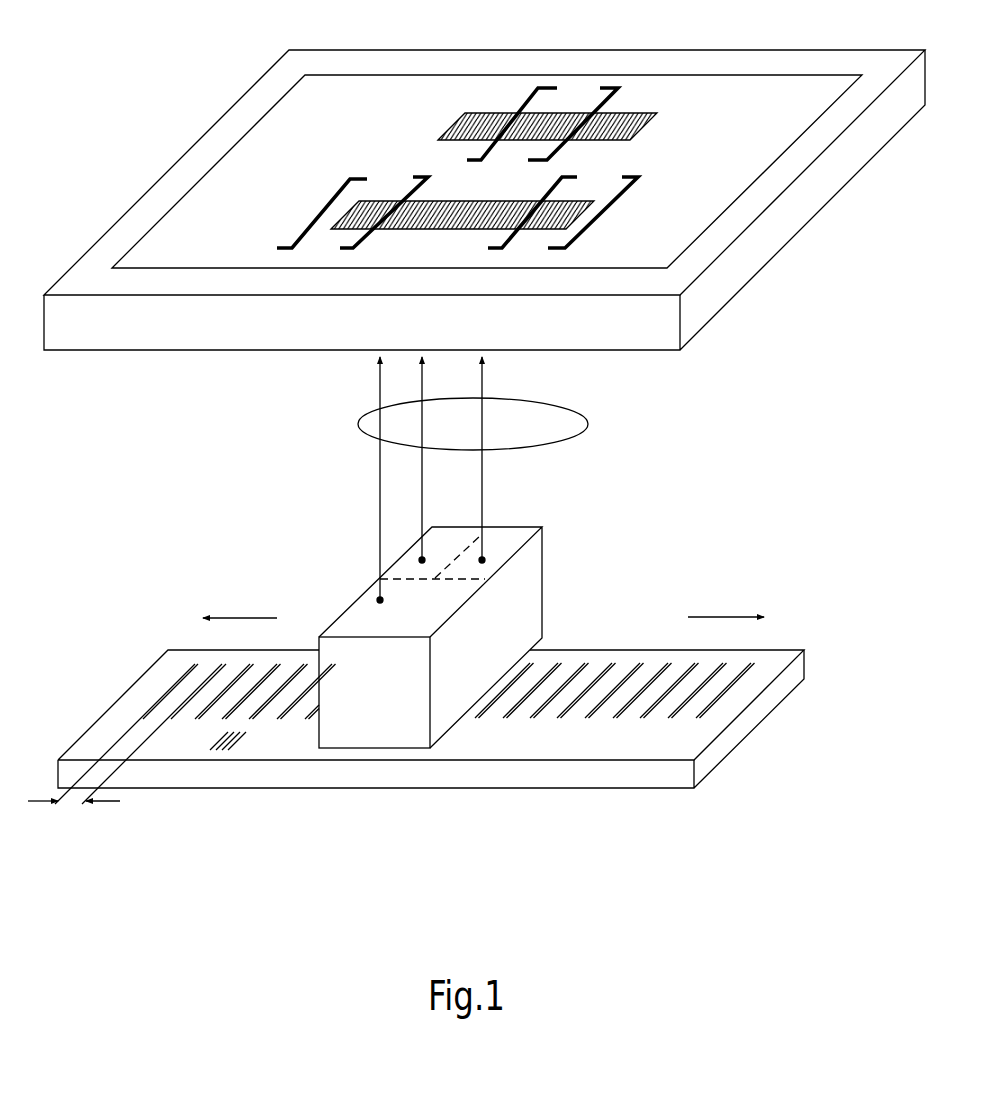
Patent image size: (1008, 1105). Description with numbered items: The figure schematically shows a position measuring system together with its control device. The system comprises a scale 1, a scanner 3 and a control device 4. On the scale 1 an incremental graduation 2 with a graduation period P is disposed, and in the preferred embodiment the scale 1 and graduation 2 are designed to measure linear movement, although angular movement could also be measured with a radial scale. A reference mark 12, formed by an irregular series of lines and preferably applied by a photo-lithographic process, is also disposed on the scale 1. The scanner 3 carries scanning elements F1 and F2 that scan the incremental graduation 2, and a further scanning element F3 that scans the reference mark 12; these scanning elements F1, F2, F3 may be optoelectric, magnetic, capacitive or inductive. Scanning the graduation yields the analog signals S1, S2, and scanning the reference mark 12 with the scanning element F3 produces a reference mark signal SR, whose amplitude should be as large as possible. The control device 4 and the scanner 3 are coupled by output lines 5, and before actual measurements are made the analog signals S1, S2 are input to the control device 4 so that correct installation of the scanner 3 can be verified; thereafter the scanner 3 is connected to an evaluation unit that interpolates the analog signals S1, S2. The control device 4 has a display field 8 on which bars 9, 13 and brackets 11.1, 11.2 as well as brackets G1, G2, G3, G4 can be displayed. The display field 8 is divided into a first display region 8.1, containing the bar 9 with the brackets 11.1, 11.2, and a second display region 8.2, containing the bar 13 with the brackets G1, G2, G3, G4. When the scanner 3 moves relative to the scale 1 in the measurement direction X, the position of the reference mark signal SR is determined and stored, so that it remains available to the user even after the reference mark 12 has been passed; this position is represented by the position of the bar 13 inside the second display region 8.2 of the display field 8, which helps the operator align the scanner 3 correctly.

The scale 1 is at (290, 735).
The incremental graduation 2 is at (173, 686).
The scanner 3 is at (358, 613).
The control device 4 is at (150, 334).
The output lines 5 is at (588, 418).
The display field 8 is at (222, 236).
The first display region 8.1 is at (559, 82).
The second display region 8.2 is at (476, 196).
The bar 9 is at (472, 115).
The bracket 11.1 is at (532, 90).
The bracket 11.2 is at (617, 92).
The reference mark 12 is at (232, 752).
The bar 13 is at (355, 201).
The bracket G1 is at (294, 231).
The bracket G2 is at (490, 245).
The bracket G3 is at (354, 201).
The bracket G4 is at (566, 246).
The reference mark signal SR is at (379, 488).
The analog signal S1 is at (424, 486).
The analog signal S2 is at (484, 486).
The scanning element F1 is at (455, 557).
The scanning element F2 is at (513, 557).
The scanning element F3 is at (425, 631).
The measurement direction X is at (483, 603).
The graduation period P is at (74, 820).